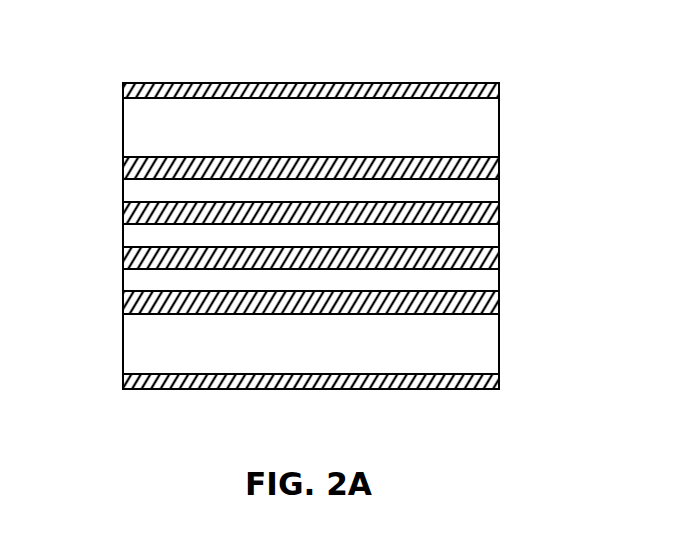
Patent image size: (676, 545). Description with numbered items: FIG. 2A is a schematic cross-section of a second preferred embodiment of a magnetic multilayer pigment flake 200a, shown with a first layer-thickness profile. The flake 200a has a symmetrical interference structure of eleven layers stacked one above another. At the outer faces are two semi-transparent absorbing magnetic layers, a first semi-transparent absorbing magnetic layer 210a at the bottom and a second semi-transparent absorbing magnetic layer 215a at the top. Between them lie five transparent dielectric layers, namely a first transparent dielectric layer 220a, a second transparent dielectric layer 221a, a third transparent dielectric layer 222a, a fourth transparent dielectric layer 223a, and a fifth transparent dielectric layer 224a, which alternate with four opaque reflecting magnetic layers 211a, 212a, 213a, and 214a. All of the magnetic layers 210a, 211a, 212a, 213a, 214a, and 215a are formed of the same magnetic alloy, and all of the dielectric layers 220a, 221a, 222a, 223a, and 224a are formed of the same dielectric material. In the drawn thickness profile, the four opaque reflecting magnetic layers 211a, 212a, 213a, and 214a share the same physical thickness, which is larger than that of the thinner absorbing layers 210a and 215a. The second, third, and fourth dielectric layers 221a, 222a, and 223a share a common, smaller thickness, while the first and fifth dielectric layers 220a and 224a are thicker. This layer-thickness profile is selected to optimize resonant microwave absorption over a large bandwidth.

The pigment flake 200a is at (133, 50).
The first semi-transparent absorbing magnetic layer 210a is at (499, 381).
The first opaque reflecting magnetic layer 211a is at (499, 302).
The second opaque reflecting magnetic layer 212a is at (499, 258).
The third opaque reflecting magnetic layer 213a is at (499, 213).
The fourth opaque reflecting magnetic layer 214a is at (499, 167).
The second semi-transparent absorbing magnetic layer 215a is at (499, 91).
The first transparent dielectric layer 220a is at (123, 343).
The second transparent dielectric layer 221a is at (123, 282).
The third transparent dielectric layer 222a is at (123, 237).
The fourth transparent dielectric layer 223a is at (123, 191).
The fifth transparent dielectric layer 224a is at (123, 130).